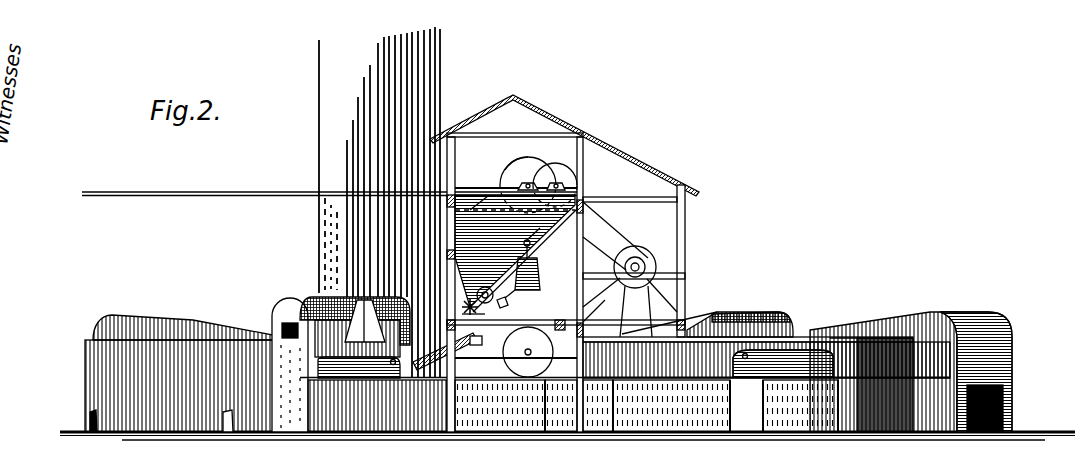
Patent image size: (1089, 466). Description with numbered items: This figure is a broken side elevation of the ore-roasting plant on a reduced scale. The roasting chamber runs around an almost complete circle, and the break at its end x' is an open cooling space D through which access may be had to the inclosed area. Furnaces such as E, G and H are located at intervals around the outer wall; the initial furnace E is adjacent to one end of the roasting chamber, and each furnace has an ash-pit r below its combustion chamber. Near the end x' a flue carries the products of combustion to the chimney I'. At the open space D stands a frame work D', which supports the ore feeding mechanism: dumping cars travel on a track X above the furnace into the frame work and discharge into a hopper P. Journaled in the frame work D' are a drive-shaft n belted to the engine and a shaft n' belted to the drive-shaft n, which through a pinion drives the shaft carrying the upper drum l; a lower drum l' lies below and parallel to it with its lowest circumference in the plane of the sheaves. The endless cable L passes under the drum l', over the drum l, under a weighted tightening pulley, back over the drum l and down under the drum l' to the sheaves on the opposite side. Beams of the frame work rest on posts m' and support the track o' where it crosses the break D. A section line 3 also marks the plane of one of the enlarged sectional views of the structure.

The track X is at (178, 190).
The chimney I' is at (379, 202).
The frame work D' is at (564, 263).
The cooling space D is at (567, 449).
The drum l is at (505, 164).
The shaft n' is at (555, 175).
The drive-shaft n is at (635, 258).
The hopper P is at (455, 268).
The endless cable L is at (504, 304).
The furnace H is at (152, 326).
The end of roasting chamber x' is at (292, 382).
The section line 3 is at (303, 396).
The drum l' is at (528, 352).
The posts m' is at (646, 406).
The track o' is at (766, 358).
The furnace G is at (734, 320).
The initial furnace E is at (988, 322).
The ash-pit r is at (840, 434).